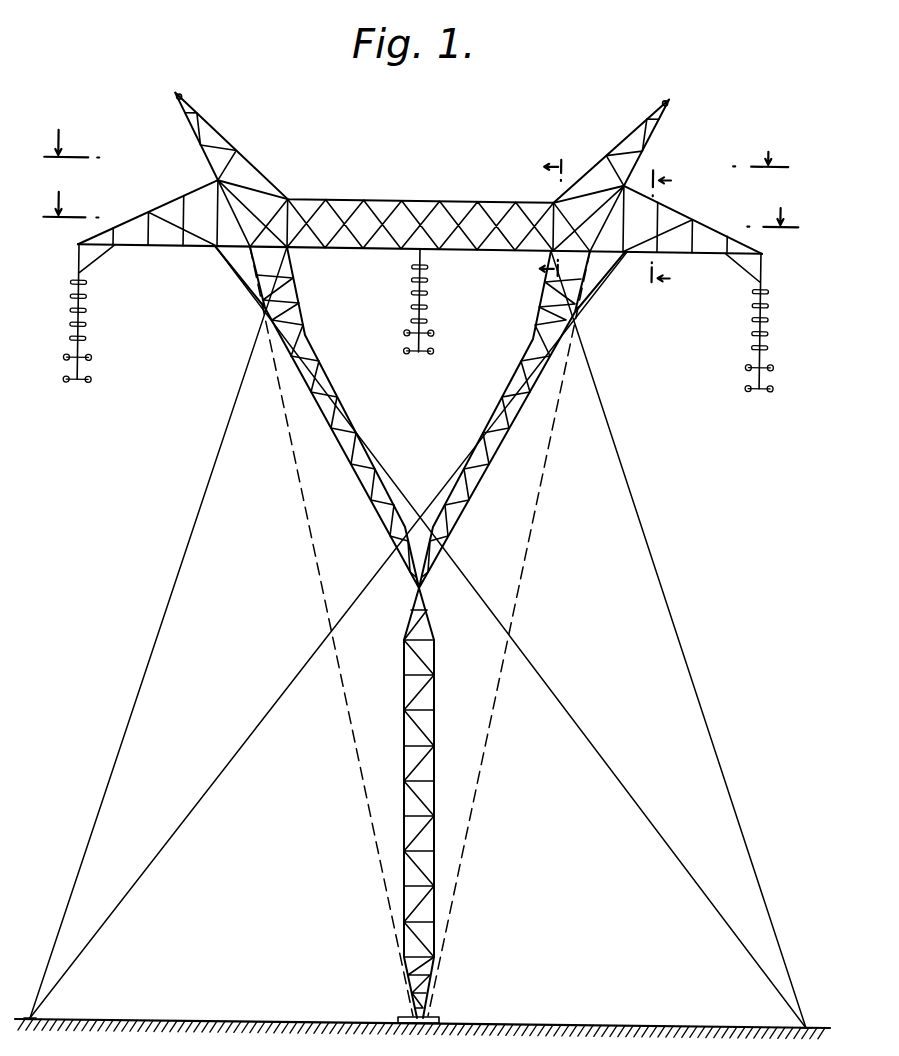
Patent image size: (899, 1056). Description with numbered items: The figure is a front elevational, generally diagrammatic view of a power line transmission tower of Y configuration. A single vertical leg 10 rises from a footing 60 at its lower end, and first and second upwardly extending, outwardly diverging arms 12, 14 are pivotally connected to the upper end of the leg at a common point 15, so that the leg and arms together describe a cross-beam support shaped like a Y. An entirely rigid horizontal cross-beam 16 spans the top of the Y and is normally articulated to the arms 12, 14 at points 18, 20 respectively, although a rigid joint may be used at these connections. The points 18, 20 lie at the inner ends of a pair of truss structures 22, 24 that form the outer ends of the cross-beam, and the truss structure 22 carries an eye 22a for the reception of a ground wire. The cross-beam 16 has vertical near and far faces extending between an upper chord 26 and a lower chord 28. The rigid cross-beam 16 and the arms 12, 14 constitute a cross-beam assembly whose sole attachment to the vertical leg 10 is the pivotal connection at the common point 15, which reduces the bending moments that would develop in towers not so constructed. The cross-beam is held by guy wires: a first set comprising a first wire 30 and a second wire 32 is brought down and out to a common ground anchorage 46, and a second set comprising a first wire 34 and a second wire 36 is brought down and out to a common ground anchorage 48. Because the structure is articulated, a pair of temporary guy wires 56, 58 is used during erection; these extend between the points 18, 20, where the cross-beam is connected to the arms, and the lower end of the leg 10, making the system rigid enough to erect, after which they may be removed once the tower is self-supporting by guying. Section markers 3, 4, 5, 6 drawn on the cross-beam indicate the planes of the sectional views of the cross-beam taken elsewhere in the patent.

The vertical leg 10 is at (436, 690).
The first arm 12 is at (510, 383).
The second arm 14 is at (333, 384).
The common point 15 is at (424, 588).
The horizontal cross-beam 16 is at (420, 242).
The connection point 18 is at (594, 254).
The connection point 20 is at (246, 252).
The truss structure 22 is at (642, 151).
The eye 22a is at (670, 103).
The truss structure 24 is at (223, 136).
The upper chord 26 is at (450, 202).
The lower chord 28 is at (456, 252).
The first wire 30 is at (270, 690).
The second wire 32 is at (148, 645).
The first wire 34 is at (547, 666).
The second wire 36 is at (673, 627).
The common ground anchorage 46 is at (30, 1016).
The common ground anchorage 48 is at (803, 1026).
The temporary guy wire 56 is at (312, 556).
The temporary guy wire 58 is at (531, 535).
The footing 60 is at (398, 1018).
The section line 3- 3 is at (421, 199).
The section line 4- 4 is at (416, 137).
The section line 5- 5 is at (670, 232).
The section line 6- 6 is at (540, 219).